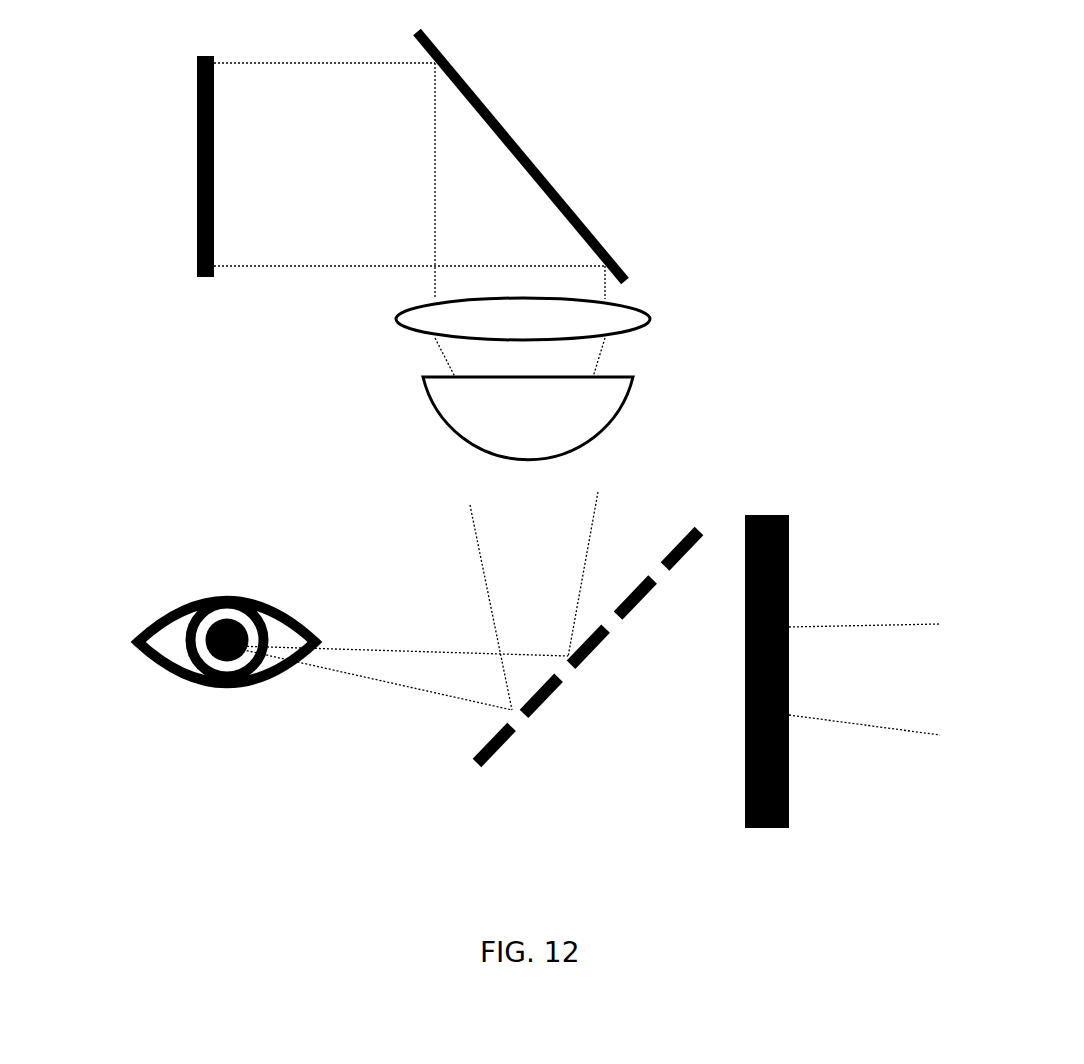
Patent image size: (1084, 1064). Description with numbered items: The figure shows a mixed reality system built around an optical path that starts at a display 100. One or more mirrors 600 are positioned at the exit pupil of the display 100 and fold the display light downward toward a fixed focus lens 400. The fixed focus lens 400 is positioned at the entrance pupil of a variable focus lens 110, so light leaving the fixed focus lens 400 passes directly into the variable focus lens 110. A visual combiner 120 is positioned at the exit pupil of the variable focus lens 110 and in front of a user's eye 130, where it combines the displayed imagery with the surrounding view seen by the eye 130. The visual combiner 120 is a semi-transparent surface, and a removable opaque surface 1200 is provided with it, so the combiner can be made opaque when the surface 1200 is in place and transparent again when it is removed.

The display 100 is at (197, 155).
The mirror 600 is at (503, 132).
The fixed focus lens 400 is at (562, 312).
The variable focus lens 110 is at (580, 447).
The removable opaque surface 1200 is at (789, 558).
The visual combiner 120 is at (545, 705).
The user's eye 130 is at (197, 688).